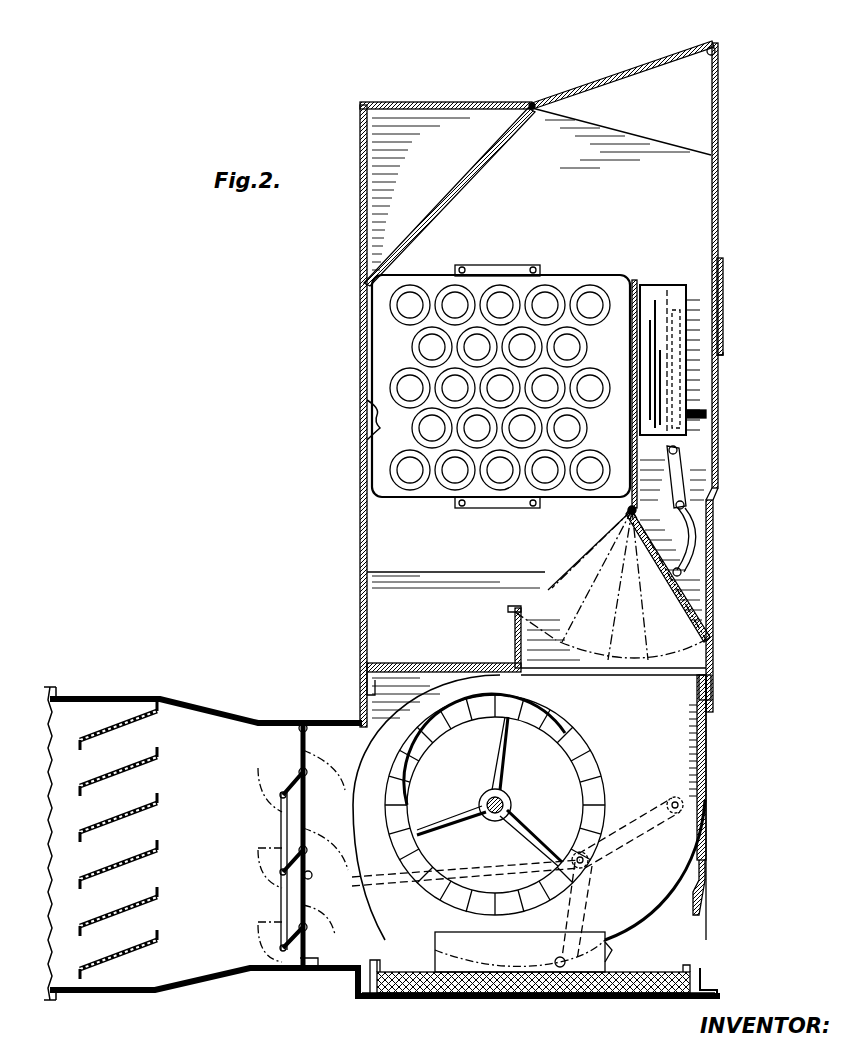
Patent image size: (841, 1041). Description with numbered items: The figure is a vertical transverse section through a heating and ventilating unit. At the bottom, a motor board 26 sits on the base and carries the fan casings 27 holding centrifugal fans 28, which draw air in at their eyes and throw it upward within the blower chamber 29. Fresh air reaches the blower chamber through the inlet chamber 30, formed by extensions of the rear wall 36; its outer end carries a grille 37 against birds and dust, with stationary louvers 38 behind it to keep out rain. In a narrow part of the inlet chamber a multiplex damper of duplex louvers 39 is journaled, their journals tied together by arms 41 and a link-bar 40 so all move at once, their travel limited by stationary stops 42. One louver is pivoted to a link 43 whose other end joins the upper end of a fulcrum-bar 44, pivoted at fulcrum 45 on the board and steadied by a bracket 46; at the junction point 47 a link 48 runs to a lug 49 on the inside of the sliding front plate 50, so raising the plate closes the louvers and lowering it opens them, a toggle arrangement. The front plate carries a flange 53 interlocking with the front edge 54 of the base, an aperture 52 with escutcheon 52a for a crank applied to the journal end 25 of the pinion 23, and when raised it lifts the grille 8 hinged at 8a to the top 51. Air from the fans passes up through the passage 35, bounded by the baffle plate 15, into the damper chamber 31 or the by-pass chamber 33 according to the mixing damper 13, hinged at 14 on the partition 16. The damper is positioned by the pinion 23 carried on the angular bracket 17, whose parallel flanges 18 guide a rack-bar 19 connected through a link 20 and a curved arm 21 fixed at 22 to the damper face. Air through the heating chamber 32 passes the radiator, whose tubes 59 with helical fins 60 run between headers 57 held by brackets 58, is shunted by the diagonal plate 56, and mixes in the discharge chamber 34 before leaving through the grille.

The hinged grille 8 is at (628, 68).
The grille hinge 8a is at (534, 102).
The mixing damper 13 is at (712, 616).
The hinge of mixing damper 14 is at (625, 512).
The baffle plate 15 is at (512, 630).
The partition 16 is at (641, 282).
The angular bracket 17 is at (645, 290).
The parallel flanges 18 is at (676, 292).
The rack-bar 19 is at (680, 447).
The link 20 is at (718, 472).
The curved arm 21 is at (695, 530).
The fixing point of curved arm 22 is at (683, 572).
The operating pinion 23 is at (702, 388).
The journal end 25 is at (702, 405).
The motor board 26 is at (488, 995).
The fan casings 27 is at (670, 902).
The centrifugal fans 28 is at (593, 748).
The blower chamber 29 is at (650, 946).
The inlet chamber 30 is at (214, 745).
The damper chamber 31 is at (403, 559).
The heating chamber 32 is at (368, 420).
The by-pass chamber 33 is at (706, 459).
The mixing and discharge chamber 34 is at (462, 224).
The passage 35 is at (688, 669).
The rear wall 36 is at (360, 606).
The grille 37 is at (58, 712).
The stationary louvers 38 is at (130, 810).
The duplex louvers 39 is at (306, 724).
The link-bar 40 is at (279, 833).
The arms 41 is at (275, 788).
The stationary stops 42 is at (300, 730).
The link 43 is at (392, 878).
The fulcrum-bar 44 is at (582, 896).
The fulcrum 45 is at (566, 968).
The bracket 46 is at (610, 962).
The junction point 47 is at (583, 850).
The link 48 is at (645, 815).
The lug 49 is at (704, 808).
The front plate 50 is at (714, 580).
The top of casing 51 is at (428, 102).
The aperture 52 is at (723, 304).
The escutcheon 52a is at (723, 332).
The flange 53 is at (708, 866).
The front edge of base 54 is at (715, 981).
The deflecting plate 56 is at (458, 163).
The headers 57 is at (384, 334).
The brackets 58 is at (507, 265).
The radiator tubes 59 is at (588, 472).
The fins 60 is at (571, 286).